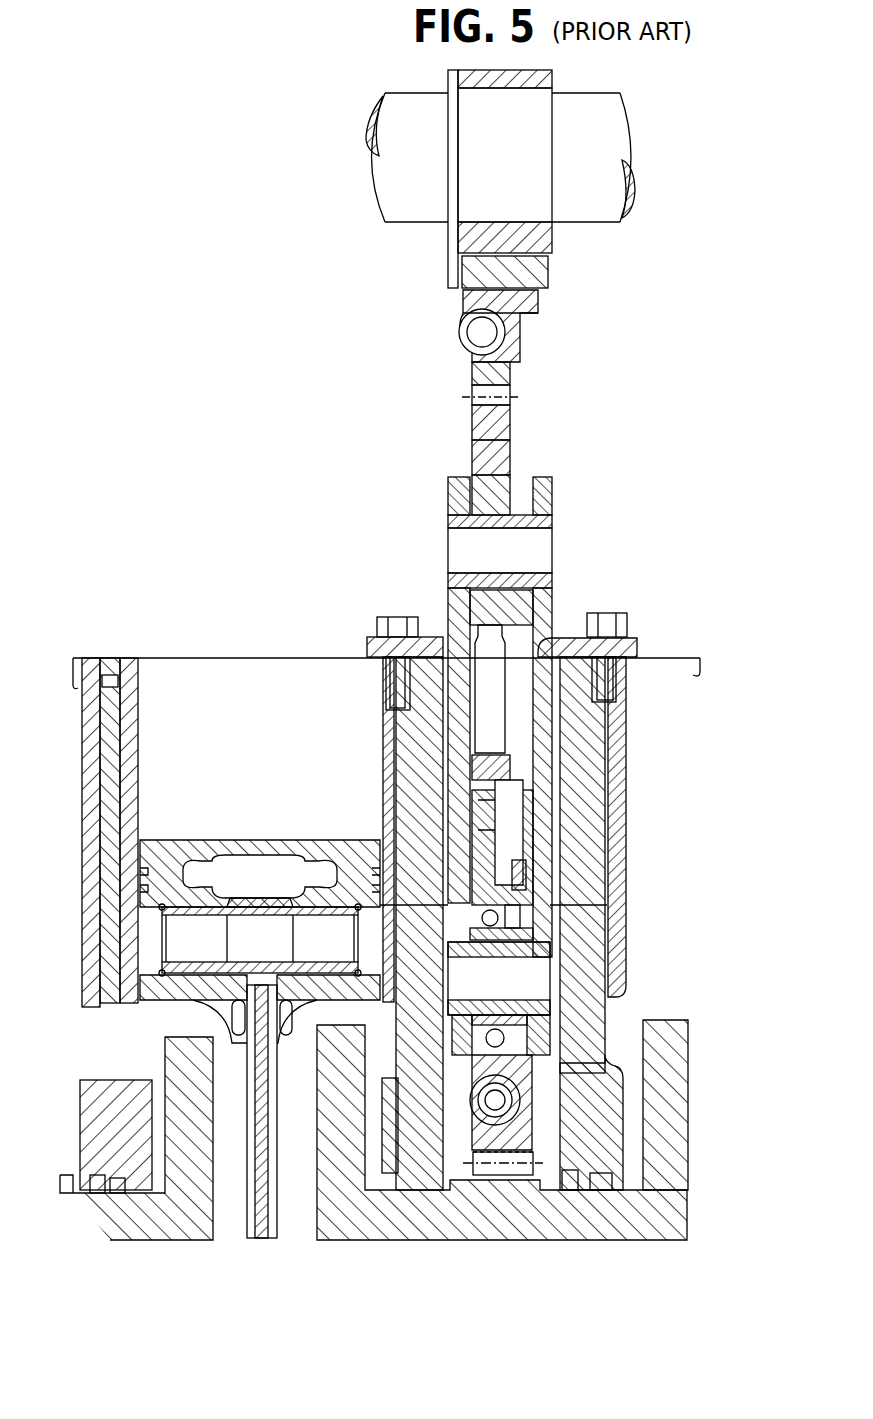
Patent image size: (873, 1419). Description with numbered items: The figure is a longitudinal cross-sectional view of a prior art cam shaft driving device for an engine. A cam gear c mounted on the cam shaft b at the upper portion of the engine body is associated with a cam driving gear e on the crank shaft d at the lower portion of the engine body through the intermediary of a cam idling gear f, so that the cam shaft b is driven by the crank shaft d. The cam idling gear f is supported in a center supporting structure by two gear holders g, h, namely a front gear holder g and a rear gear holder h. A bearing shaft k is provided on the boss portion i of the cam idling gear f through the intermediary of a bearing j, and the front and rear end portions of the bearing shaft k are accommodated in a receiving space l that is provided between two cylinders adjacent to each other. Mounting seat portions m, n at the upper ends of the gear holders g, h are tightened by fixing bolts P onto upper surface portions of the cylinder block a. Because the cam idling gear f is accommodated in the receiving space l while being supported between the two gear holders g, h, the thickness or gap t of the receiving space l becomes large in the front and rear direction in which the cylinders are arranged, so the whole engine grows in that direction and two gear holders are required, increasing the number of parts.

The cylinder block a is at (405, 805).
The cam shaft b is at (625, 124).
The cam gear c is at (510, 373).
The crank shaft d is at (483, 1222).
The cam driving gear e is at (537, 1160).
The cam idling gear f is at (483, 845).
The gear holder g is at (457, 755).
The gear holder h is at (550, 740).
The boss portion i is at (523, 890).
The bearing j is at (490, 927).
The bearing shaft k is at (560, 995).
The receiving space l is at (540, 1095).
The mounting seat portion m is at (368, 640).
The mounting seat portion n is at (637, 633).
The fixing bolt P is at (398, 617).
The gap t is at (450, 712).